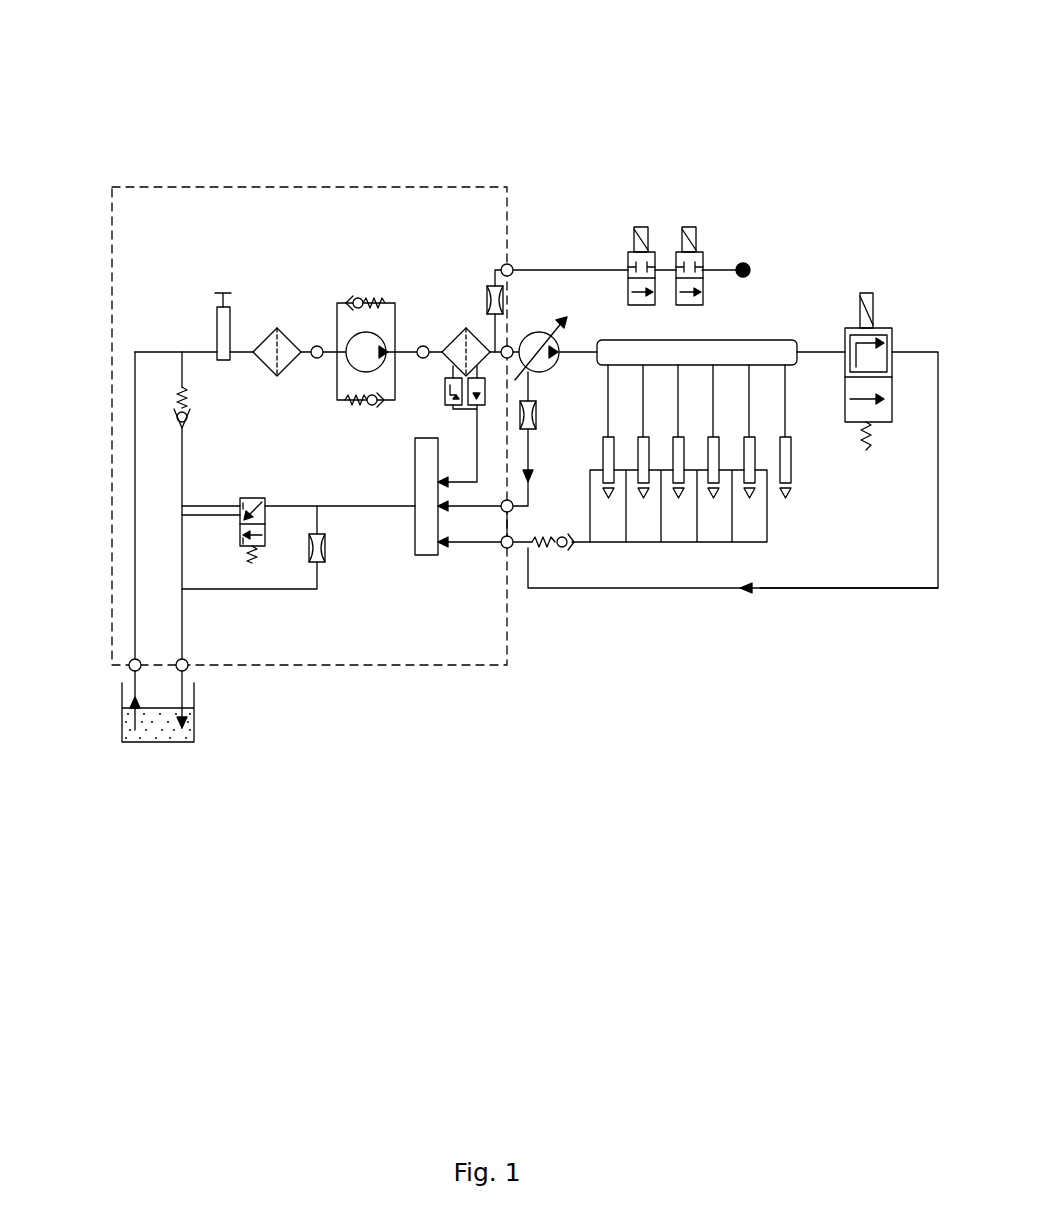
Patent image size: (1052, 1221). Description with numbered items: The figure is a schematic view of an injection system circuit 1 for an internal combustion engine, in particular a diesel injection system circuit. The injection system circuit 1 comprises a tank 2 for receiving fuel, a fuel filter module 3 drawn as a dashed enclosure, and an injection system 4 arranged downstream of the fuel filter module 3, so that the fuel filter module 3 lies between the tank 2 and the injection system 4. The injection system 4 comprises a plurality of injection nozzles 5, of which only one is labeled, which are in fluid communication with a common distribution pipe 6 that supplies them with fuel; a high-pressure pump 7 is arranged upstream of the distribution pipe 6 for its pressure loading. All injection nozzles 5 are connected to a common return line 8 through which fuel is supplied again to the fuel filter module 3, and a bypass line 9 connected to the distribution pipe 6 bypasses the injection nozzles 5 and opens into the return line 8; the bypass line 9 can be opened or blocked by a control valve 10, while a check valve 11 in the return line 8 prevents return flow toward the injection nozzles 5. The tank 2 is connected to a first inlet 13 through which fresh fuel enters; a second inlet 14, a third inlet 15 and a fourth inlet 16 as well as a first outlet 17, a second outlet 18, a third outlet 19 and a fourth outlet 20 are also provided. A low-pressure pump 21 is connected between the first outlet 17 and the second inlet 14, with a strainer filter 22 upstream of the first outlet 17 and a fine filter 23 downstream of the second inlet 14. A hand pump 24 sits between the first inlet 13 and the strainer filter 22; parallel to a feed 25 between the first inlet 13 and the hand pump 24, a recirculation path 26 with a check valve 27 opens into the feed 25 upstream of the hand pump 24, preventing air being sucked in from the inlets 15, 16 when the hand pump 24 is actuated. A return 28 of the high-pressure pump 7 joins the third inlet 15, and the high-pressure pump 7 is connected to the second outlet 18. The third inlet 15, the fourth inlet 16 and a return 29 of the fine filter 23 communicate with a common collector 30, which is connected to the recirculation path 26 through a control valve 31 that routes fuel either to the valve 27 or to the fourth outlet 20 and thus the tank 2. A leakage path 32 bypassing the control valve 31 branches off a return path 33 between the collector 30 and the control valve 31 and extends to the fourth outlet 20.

The injection system circuit 1 is at (735, 85).
The tank 2 is at (160, 742).
The fuel filter module 3 is at (497, 176).
The injection system 4 is at (772, 322).
The injection nozzles 5 is at (791, 473).
The distribution pipe 6 is at (712, 340).
The high-pressure pump 7 is at (531, 333).
The return line 8 is at (642, 542).
The bypass line 9 is at (777, 588).
The control valve 10 is at (880, 328).
The check valve 11 is at (553, 548).
The first inlet 13 is at (128, 668).
The second inlet 14 is at (423, 346).
The third inlet 15 is at (503, 511).
The fourth inlet 16 is at (505, 548).
The first outlet 17 is at (317, 346).
The second outlet 18 is at (517, 337).
The third outlet 19 is at (504, 263).
The fourth outlet 20 is at (188, 669).
The low-pressure pump 21 is at (367, 332).
The strainer filter 22 is at (270, 330).
The fine filter 23 is at (468, 328).
The hand pump 24 is at (221, 291).
The feed 25 is at (135, 458).
The recirculation path 26 is at (182, 373).
The valve 27 is at (178, 412).
The return 28 is at (511, 505).
The return 29 is at (477, 440).
The collector 30 is at (415, 535).
The control valve 31 is at (253, 498).
The leakage path 32 is at (265, 589).
The return path 33 is at (362, 506).